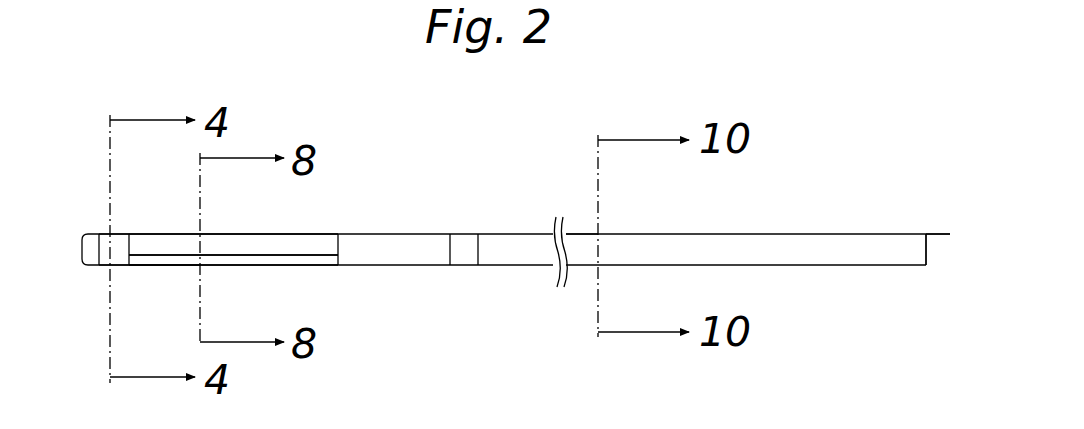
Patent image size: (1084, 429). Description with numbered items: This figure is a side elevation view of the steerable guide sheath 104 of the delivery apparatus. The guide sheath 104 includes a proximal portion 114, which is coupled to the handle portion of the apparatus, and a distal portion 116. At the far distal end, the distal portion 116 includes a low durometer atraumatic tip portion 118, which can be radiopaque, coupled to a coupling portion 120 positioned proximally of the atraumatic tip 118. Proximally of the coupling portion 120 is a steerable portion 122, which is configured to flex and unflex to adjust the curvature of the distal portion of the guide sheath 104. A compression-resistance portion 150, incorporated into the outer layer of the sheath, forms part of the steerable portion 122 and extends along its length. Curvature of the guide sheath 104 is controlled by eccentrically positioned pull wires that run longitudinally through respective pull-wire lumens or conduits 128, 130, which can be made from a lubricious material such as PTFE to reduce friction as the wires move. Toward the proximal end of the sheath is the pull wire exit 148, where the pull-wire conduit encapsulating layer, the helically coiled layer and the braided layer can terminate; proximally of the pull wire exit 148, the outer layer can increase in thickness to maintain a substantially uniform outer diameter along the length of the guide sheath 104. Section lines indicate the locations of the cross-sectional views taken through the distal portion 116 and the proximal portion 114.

The steerable guide sheath 104 is at (372, 233).
The proximal portion 114 is at (763, 233).
The distal portion 116 is at (180, 270).
The atraumatic tip portion 118 is at (97, 233).
The coupling portion 120 is at (148, 233).
The steerable portion 122 is at (252, 233).
The pull-wire conduit 128 is at (896, 200).
The pull-wire conduit 130 is at (943, 233).
The pull wire exit 148 is at (589, 231).
The compression-resistance portion 150 is at (302, 267).